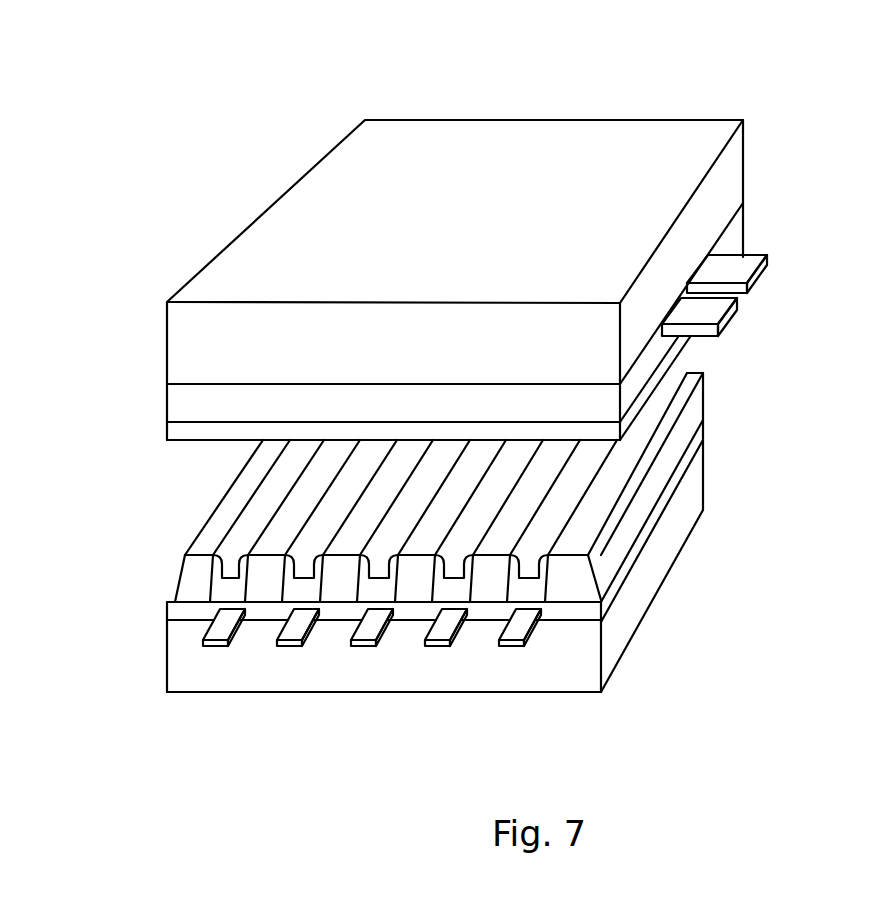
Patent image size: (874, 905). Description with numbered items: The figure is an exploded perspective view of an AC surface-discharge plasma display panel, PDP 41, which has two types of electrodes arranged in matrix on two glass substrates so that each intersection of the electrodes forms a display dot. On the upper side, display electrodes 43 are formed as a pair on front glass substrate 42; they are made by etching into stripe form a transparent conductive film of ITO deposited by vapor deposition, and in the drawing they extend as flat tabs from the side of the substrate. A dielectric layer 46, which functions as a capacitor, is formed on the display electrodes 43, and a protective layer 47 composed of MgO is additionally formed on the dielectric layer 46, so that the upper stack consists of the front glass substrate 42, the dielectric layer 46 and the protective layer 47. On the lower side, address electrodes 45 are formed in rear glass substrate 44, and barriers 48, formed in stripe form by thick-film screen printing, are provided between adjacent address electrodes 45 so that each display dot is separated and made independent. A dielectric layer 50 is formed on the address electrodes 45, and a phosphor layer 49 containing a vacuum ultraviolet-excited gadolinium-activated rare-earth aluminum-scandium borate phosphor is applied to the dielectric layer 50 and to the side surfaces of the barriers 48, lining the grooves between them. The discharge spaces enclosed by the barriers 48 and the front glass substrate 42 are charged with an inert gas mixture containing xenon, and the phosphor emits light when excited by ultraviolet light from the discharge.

The plasma display panel 41 is at (714, 96).
The front glass substrate 42 is at (703, 138).
The display electrodes 43 is at (737, 267).
The rear glass substrate 44 is at (613, 644).
The address electrodes 45 is at (223, 629).
The dielectric layer 46 is at (182, 404).
The protective layer 47 is at (183, 425).
The barriers 48 is at (580, 570).
The phosphor layer 49 is at (237, 585).
The dielectric layer 50 is at (185, 609).